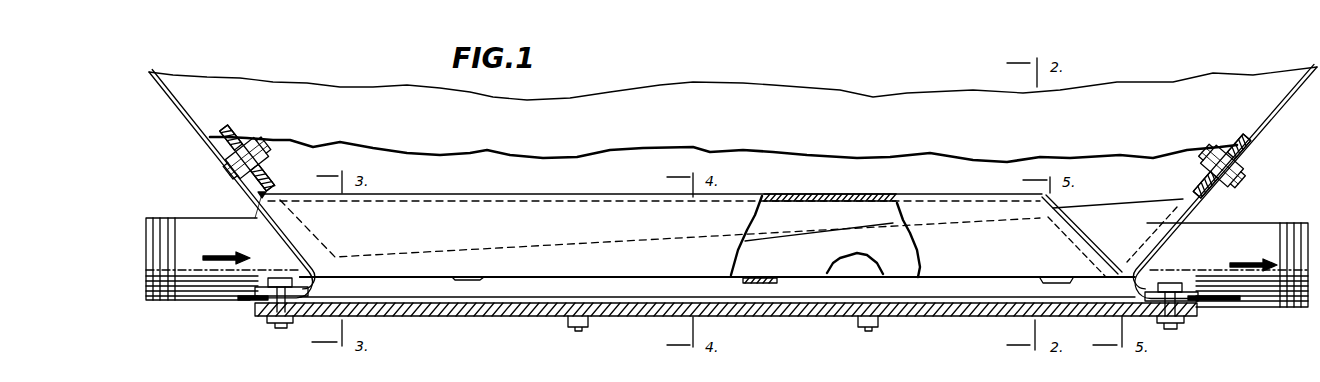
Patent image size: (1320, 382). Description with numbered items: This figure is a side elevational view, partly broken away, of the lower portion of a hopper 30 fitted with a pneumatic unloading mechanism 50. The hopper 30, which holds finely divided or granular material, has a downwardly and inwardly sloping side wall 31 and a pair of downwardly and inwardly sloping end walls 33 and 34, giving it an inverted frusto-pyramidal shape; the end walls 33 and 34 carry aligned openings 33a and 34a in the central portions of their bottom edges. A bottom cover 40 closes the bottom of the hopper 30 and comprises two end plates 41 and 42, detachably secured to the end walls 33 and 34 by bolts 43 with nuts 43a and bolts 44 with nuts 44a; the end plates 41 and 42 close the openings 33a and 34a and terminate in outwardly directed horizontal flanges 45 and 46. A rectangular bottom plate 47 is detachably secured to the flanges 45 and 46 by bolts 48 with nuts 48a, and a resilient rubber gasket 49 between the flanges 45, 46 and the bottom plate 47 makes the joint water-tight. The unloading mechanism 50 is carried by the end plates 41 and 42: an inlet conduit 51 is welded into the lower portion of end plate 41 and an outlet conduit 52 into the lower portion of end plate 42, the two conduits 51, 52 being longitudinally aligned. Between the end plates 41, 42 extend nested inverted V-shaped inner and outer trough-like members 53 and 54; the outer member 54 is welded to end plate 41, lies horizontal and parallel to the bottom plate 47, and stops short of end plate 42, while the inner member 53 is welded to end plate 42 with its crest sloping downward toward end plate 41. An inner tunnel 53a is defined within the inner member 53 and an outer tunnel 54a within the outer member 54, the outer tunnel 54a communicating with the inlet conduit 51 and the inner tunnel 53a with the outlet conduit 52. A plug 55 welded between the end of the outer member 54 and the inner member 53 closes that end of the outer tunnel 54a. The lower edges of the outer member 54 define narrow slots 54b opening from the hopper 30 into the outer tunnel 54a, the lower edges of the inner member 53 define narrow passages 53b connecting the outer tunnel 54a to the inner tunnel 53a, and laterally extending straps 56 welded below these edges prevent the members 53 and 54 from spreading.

The hopper 30 is at (752, 102).
The side wall 31 is at (350, 97).
The end wall 33 is at (213, 149).
The opening 33a is at (254, 183).
The end wall 34 is at (1244, 153).
The opening 34a is at (1200, 188).
The bottom cover 40 is at (813, 325).
The end plate 41 is at (247, 192).
The end plate 42 is at (1213, 200).
The bolts 43 is at (216, 173).
The nuts 43a is at (240, 147).
The bolts 44 is at (1248, 184).
The nuts 44a is at (1224, 141).
The flange 45 is at (242, 300).
The flange 46 is at (1222, 305).
The bottom plate 47 is at (470, 318).
The bolts 48 is at (280, 278).
The nuts 48a is at (274, 324).
The resilient gasket 49 is at (258, 305).
The pneumatic unloading mechanism 50 is at (823, 180).
The inlet conduit 51 is at (218, 246).
The outlet conduit 52 is at (1258, 248).
The inner trough-like member 53 is at (1134, 236).
The inner tunnel 53a is at (826, 270).
The narrow passages 53b is at (904, 270).
The outer trough-like member 54 is at (1030, 254).
The outer tunnel 54a is at (843, 208).
The narrow slots 54b is at (643, 289).
The plug 55 is at (1053, 206).
The straps 56 is at (477, 278).